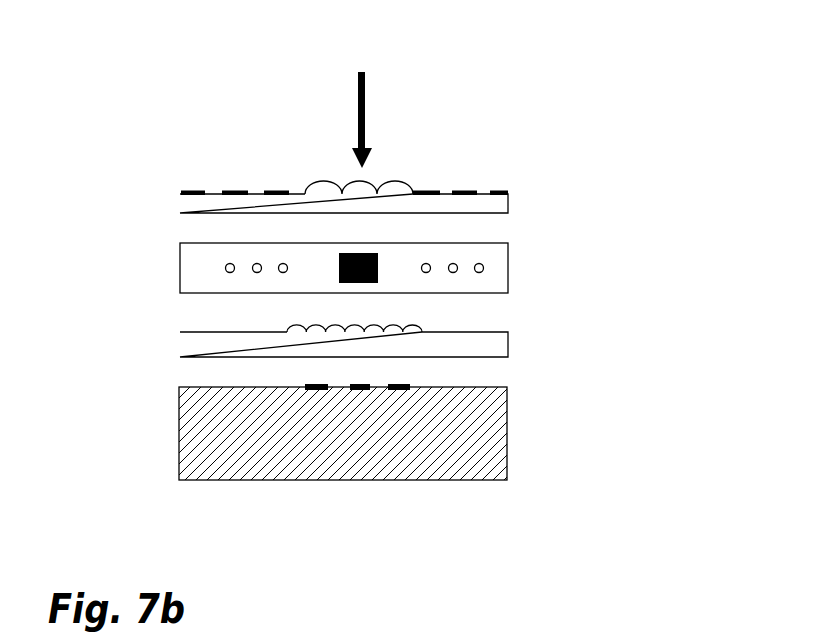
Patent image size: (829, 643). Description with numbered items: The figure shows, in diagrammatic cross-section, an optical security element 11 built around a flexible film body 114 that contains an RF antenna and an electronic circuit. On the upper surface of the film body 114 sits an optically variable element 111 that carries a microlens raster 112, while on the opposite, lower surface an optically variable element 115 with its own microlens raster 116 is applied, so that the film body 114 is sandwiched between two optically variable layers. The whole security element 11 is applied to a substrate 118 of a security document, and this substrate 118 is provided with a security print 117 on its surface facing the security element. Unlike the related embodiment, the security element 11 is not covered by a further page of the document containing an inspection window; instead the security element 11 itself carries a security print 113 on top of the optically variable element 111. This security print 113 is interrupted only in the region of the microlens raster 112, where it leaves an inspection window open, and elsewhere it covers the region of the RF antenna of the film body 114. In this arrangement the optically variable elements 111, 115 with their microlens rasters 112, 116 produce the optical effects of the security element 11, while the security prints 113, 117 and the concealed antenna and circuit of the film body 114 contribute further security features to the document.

The optical security element 11 is at (272, 133).
The optically variable element 111 is at (508, 205).
The microlens raster 112 is at (387, 186).
The security print 113 is at (467, 191).
The flexible film body 114 is at (508, 260).
The optically variable element 115 is at (508, 345).
The microlens raster 116 is at (363, 325).
The security print 117 is at (357, 385).
The substrate 118 is at (508, 434).